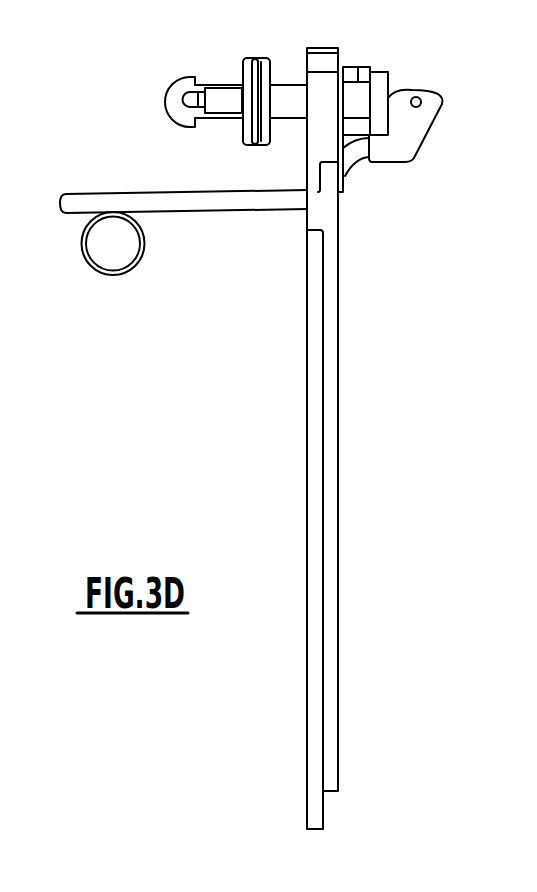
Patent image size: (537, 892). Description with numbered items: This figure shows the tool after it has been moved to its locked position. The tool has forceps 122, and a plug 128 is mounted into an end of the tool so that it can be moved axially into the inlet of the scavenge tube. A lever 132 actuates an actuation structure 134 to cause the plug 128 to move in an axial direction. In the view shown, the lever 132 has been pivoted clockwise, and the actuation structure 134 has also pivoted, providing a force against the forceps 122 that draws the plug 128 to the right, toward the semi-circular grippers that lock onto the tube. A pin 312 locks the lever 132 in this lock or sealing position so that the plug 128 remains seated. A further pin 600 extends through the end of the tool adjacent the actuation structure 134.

The support plate 122 is at (332, 413).
The roller 128 is at (258, 70).
The arm 132 is at (98, 204).
The latch bracket 134 is at (441, 106).
The ring 312 is at (105, 275).
The aperture 600 is at (421, 106).